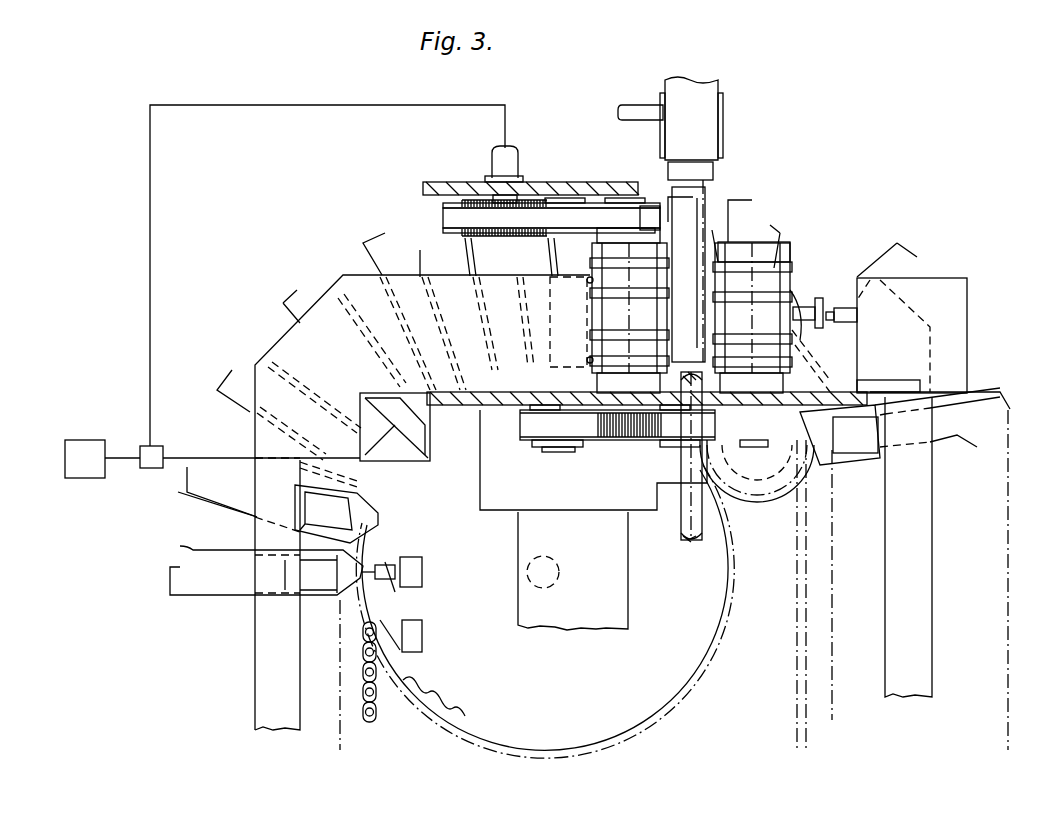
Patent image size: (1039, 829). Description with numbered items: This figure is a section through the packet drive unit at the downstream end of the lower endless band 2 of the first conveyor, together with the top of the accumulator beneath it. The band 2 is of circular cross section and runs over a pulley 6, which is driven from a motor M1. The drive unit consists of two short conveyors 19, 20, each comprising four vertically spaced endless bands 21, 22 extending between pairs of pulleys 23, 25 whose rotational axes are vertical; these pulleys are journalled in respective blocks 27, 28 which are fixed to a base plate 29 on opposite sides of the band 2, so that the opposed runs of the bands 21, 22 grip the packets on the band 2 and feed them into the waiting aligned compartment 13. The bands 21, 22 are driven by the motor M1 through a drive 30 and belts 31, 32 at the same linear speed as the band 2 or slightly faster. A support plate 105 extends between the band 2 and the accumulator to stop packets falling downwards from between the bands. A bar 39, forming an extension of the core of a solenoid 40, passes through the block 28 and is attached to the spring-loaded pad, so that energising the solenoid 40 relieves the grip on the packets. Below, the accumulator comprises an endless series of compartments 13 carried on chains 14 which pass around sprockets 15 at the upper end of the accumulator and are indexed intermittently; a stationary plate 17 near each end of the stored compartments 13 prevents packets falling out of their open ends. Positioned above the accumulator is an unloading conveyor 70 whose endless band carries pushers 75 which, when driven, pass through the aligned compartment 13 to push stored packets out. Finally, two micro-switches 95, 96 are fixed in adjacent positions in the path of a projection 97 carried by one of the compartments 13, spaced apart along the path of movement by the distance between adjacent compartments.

The lower endless band 2 is at (693, 546).
The pulley 6 is at (683, 528).
The compartment 13 is at (363, 243).
The chain 14 is at (376, 708).
The sprocket 15 is at (727, 573).
The stationary plate 17 is at (257, 668).
The short conveyor 19 is at (567, 289).
The short conveyor 20 is at (795, 305).
The endless bands 21 is at (588, 281).
The endless bands 22 is at (785, 322).
The pulley 23 is at (604, 320).
The pulley 25 is at (752, 333).
The block 27 is at (585, 262).
The block 28 is at (767, 243).
The base plate 29 is at (835, 402).
The drive 30 is at (150, 222).
The belt 31 is at (444, 212).
The belt 32 is at (522, 425).
The bar 39 is at (818, 298).
The solenoid 40 is at (947, 285).
The unloading conveyor 70 is at (724, 86).
The pusher 75 is at (706, 198).
The micro-switch 95 is at (423, 637).
The micro-switch 96 is at (423, 572).
The projection 97 is at (380, 573).
The support plate 105 is at (710, 388).
The motor M1 is at (88, 480).